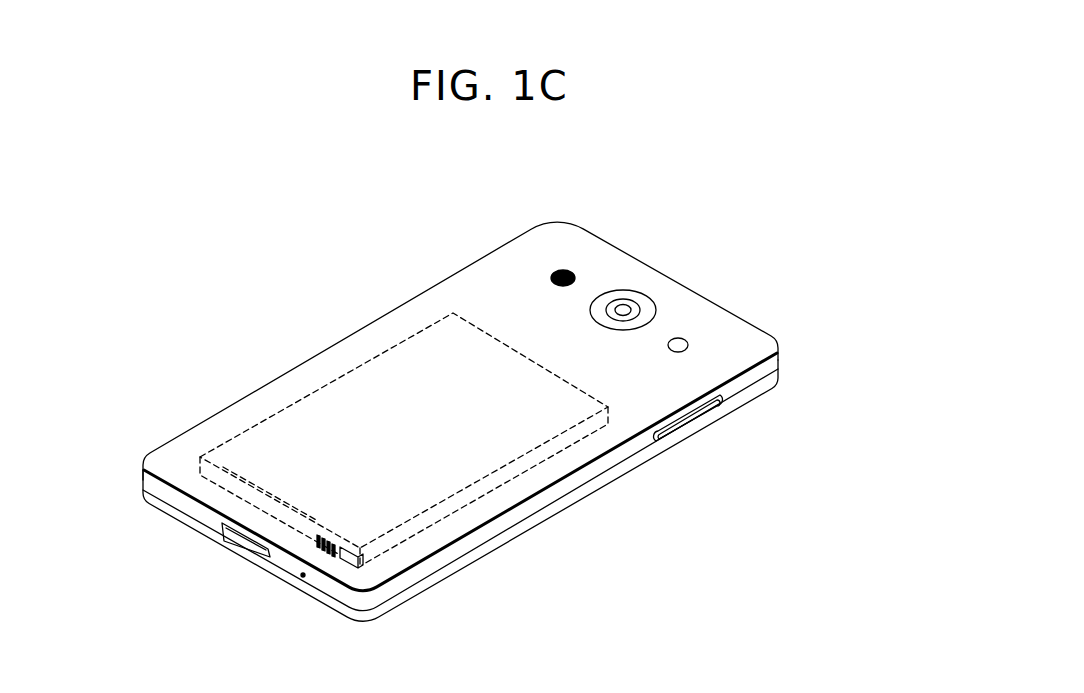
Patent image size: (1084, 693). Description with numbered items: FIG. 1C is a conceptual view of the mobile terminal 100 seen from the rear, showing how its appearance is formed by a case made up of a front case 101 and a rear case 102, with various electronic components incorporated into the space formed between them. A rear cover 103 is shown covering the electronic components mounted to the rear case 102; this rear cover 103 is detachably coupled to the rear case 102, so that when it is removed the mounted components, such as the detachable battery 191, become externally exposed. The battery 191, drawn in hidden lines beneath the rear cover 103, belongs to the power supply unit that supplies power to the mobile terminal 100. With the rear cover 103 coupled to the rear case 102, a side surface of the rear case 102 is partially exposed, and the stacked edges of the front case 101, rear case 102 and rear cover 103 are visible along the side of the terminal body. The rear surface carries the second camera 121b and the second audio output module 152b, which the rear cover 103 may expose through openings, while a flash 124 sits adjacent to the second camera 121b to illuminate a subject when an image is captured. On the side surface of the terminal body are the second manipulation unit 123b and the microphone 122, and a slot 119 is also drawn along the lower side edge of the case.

The mobile terminal 100 is at (345, 291).
The front case 101 is at (781, 380).
The rear case 102 is at (779, 364).
The rear cover 103 is at (776, 344).
The SIM card slot 119 is at (250, 543).
The second camera 121b is at (626, 306).
The microphone 122 is at (301, 578).
The second manipulation unit 123b is at (673, 433).
The flash 124 is at (683, 341).
The second audio output module 152b is at (573, 270).
The battery 191 is at (490, 491).